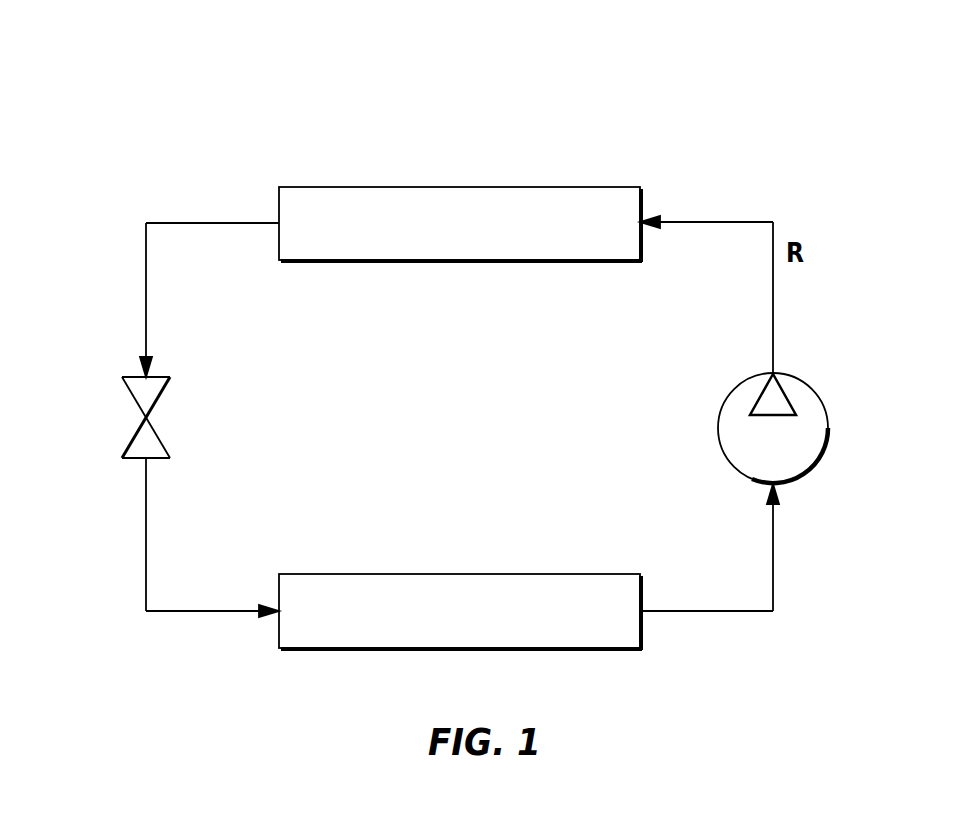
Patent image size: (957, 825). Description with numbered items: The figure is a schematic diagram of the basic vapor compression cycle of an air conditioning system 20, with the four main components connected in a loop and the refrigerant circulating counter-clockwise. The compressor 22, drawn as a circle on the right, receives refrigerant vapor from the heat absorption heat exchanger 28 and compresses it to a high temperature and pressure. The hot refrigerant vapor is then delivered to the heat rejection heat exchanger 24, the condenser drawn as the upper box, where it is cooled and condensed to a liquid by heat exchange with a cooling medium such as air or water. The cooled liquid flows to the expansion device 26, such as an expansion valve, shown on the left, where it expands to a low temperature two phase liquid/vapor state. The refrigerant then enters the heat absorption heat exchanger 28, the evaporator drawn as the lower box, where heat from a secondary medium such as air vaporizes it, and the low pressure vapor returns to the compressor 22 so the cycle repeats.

The air conditioning system 20 is at (150, 92).
The compressor 22 is at (805, 400).
The heat rejection heat exchanger 24 is at (358, 194).
The expansion device 26 is at (133, 380).
The heat absorption heat exchanger 28 is at (358, 582).